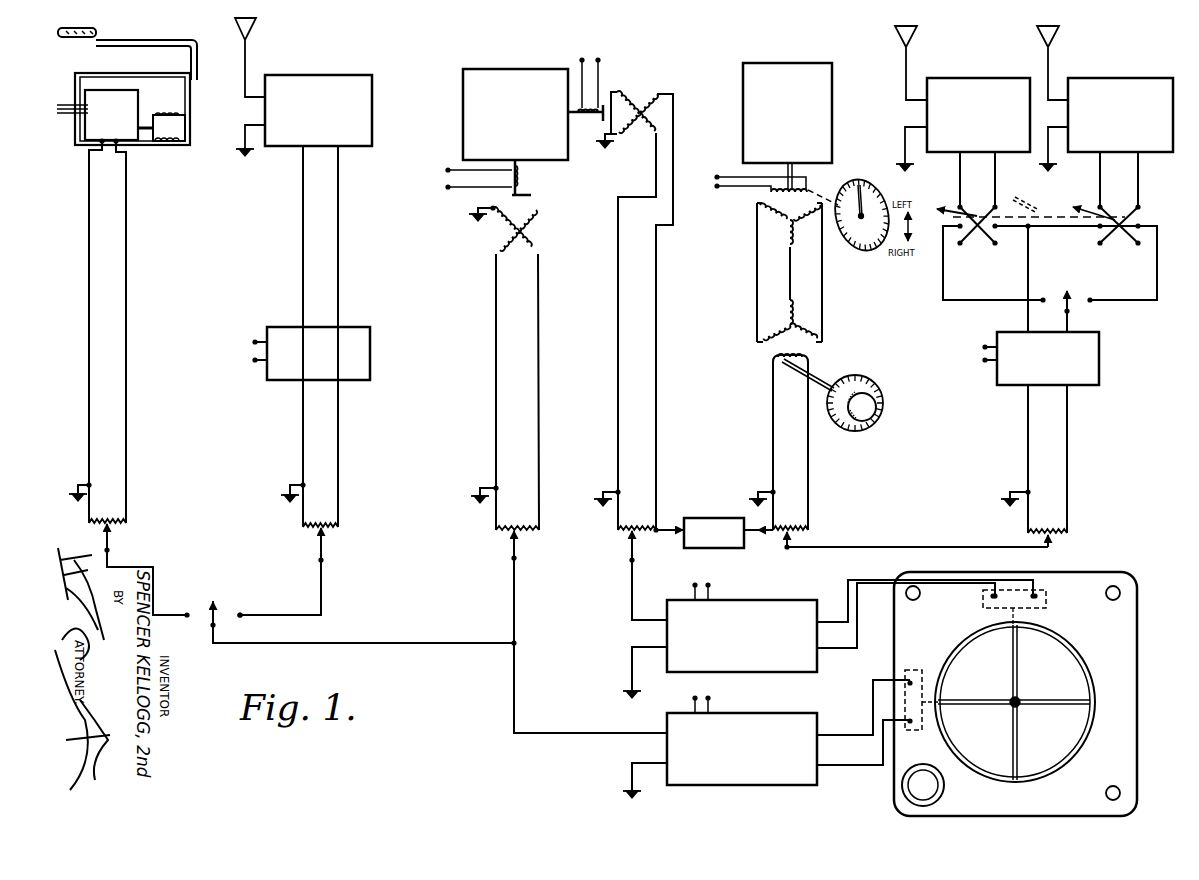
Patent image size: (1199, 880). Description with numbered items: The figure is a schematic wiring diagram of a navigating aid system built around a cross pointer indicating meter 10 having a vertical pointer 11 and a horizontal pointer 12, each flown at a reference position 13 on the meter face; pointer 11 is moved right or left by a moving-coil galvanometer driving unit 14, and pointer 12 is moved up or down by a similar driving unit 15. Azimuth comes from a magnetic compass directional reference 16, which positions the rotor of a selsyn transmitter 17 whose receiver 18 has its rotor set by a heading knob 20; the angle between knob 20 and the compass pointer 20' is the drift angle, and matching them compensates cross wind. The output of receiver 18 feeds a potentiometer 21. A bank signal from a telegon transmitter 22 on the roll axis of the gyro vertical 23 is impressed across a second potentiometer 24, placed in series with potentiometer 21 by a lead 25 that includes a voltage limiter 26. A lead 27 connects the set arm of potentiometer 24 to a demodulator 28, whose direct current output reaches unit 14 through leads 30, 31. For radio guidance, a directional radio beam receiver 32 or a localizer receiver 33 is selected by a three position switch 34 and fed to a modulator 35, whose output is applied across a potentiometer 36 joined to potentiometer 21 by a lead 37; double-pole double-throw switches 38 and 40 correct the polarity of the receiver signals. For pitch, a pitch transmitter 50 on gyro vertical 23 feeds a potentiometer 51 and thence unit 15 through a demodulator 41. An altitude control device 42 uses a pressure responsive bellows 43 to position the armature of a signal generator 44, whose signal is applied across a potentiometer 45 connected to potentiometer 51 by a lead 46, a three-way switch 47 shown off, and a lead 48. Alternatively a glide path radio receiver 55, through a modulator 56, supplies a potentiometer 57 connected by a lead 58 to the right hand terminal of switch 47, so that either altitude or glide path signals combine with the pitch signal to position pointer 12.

The indicating meter 10 is at (1115, 572).
The vertical pointer 11 is at (1018, 647).
The horizontal pointer 12 is at (1040, 706).
The reference position 13 is at (1020, 699).
The driving unit 14 is at (1042, 592).
The driving unit 15 is at (905, 677).
The directional reference 16 is at (834, 71).
The selsyn transmitter 17 is at (754, 203).
The selsyn receiver 18 is at (760, 352).
The knob 20 is at (874, 403).
The pointer 20' is at (852, 207).
The potentiometer 21 is at (803, 528).
The telegon transmitter 22 is at (651, 82).
The gyro vertical 23 is at (463, 70).
The second potentiometer 24 is at (625, 534).
The lead 25 is at (662, 530).
The voltage limiter 26 is at (712, 518).
The lead 27 is at (632, 588).
The demodulator 28 is at (773, 593).
The lead 30 is at (848, 584).
The lead 31 is at (857, 620).
The directional radio beam receiver 32 is at (1120, 78).
The localizer receiver 33 is at (977, 78).
The three position switch 34 is at (1082, 303).
The modulator 35 is at (1100, 371).
The potentiometer 36 is at (1060, 531).
The lead 37 is at (915, 547).
The double-pole double-throw switch 38 is at (977, 248).
The double-pole double-throw switch 40 is at (1122, 248).
The demodulator 41 is at (798, 713).
The altitude control device 42 is at (168, 153).
The pressure responsive bellows 43 is at (180, 125).
The signal generator 44 is at (88, 132).
The potentiometer 45 is at (115, 522).
The lead 46 is at (358, 643).
The three-way switch 47 is at (240, 607).
The lead 48 is at (153, 567).
The pitch transmitter 50 is at (549, 211).
The potentiometer 51 is at (505, 535).
The glide path radio receiver 55 is at (374, 100).
The modulator 56 is at (368, 327).
The potentiometer 57 is at (325, 520).
The lead 58 is at (323, 577).